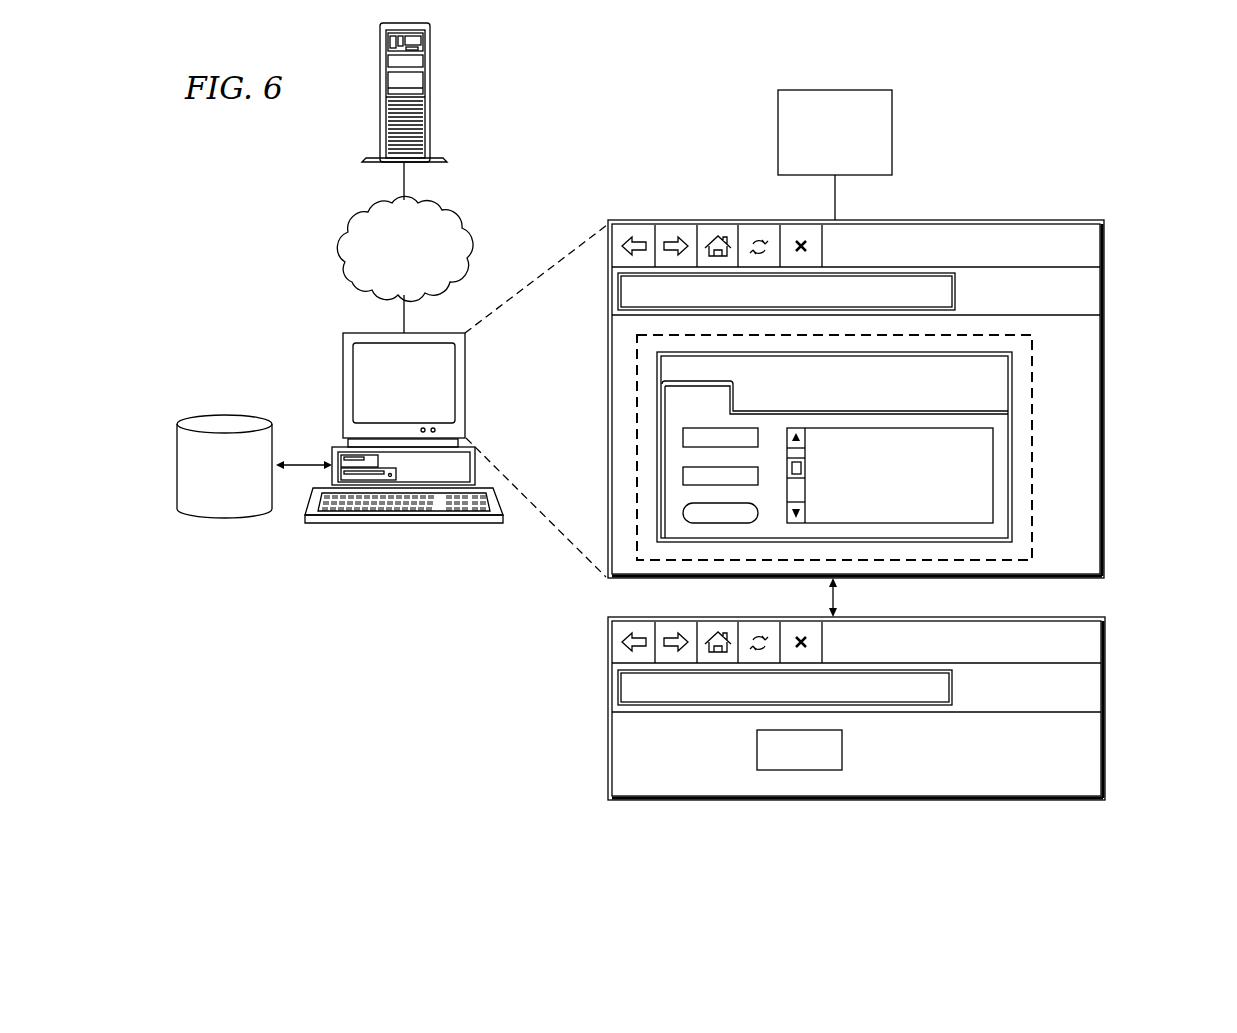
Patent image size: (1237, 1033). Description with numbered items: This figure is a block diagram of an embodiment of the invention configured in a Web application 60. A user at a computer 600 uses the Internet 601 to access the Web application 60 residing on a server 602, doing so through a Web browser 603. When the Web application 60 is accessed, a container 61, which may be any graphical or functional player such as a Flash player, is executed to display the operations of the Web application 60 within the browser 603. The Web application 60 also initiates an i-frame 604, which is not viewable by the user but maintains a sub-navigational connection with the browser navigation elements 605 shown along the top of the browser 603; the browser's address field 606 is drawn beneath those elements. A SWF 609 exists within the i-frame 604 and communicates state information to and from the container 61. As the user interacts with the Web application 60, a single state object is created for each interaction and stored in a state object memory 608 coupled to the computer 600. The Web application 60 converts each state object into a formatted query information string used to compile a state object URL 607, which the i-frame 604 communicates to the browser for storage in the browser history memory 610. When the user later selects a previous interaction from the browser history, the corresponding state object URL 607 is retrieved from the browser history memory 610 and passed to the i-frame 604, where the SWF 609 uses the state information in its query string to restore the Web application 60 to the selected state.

The computer 600 is at (343, 388).
The Internet 601 is at (340, 247).
The server 602 is at (380, 95).
The Web browser 603 is at (1108, 375).
The i-frame 604 is at (1110, 727).
The browser navigation elements 605 is at (823, 209).
The address bar 606 is at (955, 292).
The state object URL 607 is at (955, 688).
The state object memory 608 is at (226, 519).
The SWF 609 is at (845, 750).
The browser history memory 610 is at (892, 131).
The Web application 60 is at (860, 395).
The container 61 is at (1038, 449).